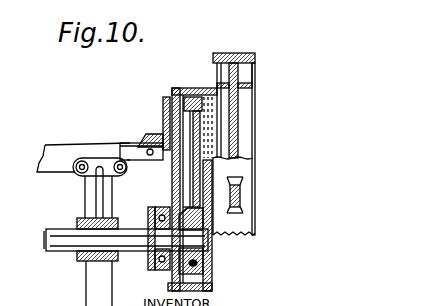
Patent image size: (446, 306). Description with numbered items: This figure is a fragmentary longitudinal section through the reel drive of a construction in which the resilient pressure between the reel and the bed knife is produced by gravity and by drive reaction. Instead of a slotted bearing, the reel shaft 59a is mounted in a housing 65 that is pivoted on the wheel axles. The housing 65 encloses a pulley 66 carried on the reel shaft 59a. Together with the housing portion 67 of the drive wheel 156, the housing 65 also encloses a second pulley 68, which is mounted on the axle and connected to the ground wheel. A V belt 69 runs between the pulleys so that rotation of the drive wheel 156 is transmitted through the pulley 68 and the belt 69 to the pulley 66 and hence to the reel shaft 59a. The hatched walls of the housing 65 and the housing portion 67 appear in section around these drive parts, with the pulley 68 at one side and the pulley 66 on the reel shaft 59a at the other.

The housing 156 is at (236, 53).
The pulley 68 is at (238, 107).
The housing 65 is at (172, 88).
The V belt 69 is at (207, 280).
The housing portion 67 is at (205, 85).
The pulley 66 is at (212, 255).
The reel shaft 59a is at (65, 235).